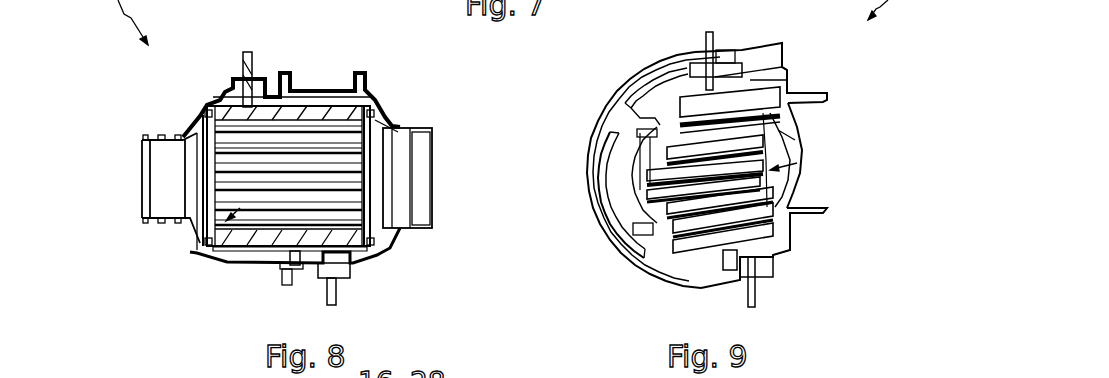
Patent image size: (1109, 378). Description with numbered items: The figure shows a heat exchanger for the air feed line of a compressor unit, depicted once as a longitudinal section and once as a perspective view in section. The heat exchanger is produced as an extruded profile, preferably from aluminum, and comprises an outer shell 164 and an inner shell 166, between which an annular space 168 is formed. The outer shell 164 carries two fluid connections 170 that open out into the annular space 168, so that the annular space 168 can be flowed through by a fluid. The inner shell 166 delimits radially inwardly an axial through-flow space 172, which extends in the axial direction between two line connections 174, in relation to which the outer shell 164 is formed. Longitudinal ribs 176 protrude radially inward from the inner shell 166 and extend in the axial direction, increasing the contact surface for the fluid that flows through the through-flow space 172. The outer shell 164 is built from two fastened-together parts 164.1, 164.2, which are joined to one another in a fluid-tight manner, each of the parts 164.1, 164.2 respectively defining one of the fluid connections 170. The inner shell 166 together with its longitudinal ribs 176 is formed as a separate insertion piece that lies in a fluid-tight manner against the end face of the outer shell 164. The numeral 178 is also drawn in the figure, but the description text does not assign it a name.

In FIG. 8, the outer shell 164 is at (384, 100).
In FIG. 9, the outer shell 164 is at (643, 83).
In FIG. 8, the first part of the outer shell 164.1 is at (273, 97).
In FIG. 9, the first part of the outer shell 164.1 is at (685, 55).
In FIG. 8, the second part of the outer shell 164.2 is at (343, 95).
In FIG. 9, the second part of the outer shell 164.2 is at (790, 82).
In FIG. 8, the inner shell 166 is at (257, 238).
In FIG. 9, the inner shell 166 is at (783, 245).
In FIG. 8, the annular space 168 is at (318, 105).
In FIG. 9, the annular space 168 is at (758, 40).
In FIG. 8, the fluid connection 170 is at (247, 70).
In FIG. 9, the fluid connection 170 is at (760, 297).
In FIG. 8, the axial through-flow space 172 is at (197, 247).
In FIG. 9, the axial through-flow space 172 is at (797, 163).
In FIG. 8, the line connection 174 is at (140, 137).
In FIG. 9, the line connection 174 is at (823, 105).
In FIG. 8, the longitudinal rib 176 is at (295, 266).
In FIG. 9, the longitudinal rib 176 is at (730, 270).
In FIG. 8, the winding 178 is at (343, 155).
In FIG. 9, the winding 178 is at (800, 132).